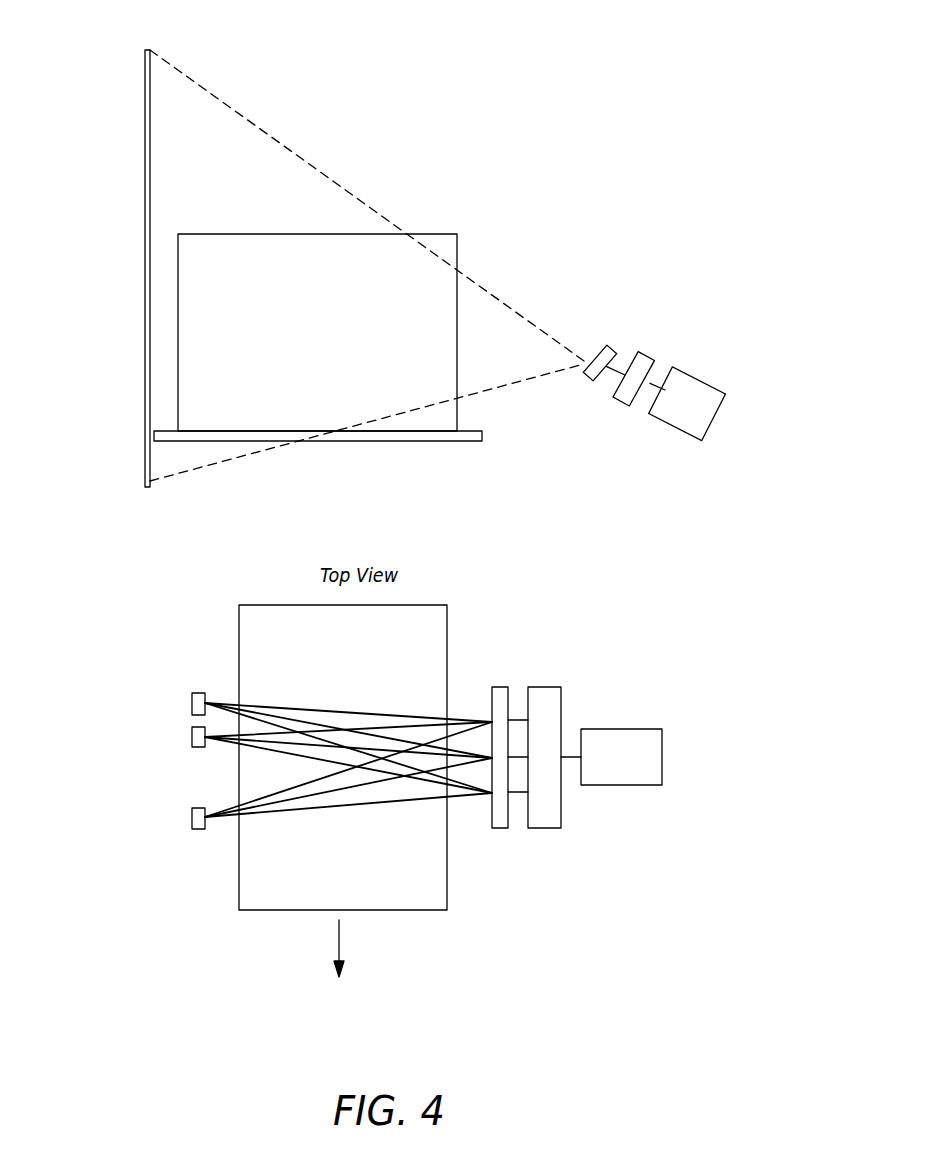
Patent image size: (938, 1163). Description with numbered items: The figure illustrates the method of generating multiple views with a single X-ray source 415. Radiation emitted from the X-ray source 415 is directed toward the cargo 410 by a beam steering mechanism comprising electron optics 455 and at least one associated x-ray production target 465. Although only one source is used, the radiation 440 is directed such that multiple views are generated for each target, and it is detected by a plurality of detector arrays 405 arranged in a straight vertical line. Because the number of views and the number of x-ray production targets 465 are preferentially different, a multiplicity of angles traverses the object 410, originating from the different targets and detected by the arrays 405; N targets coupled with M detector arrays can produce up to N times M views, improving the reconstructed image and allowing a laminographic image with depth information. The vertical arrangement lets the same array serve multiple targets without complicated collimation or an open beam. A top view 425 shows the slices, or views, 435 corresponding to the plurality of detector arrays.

The detector arrays 405 is at (143, 129).
The cargo 410 is at (197, 245).
The X-ray source 415 is at (640, 737).
The top view 425 is at (252, 634).
The slices or views 435 is at (192, 709).
The radiation 440 is at (238, 115).
The electron optics 455 is at (577, 857).
The x-ray production target 465 is at (500, 692).